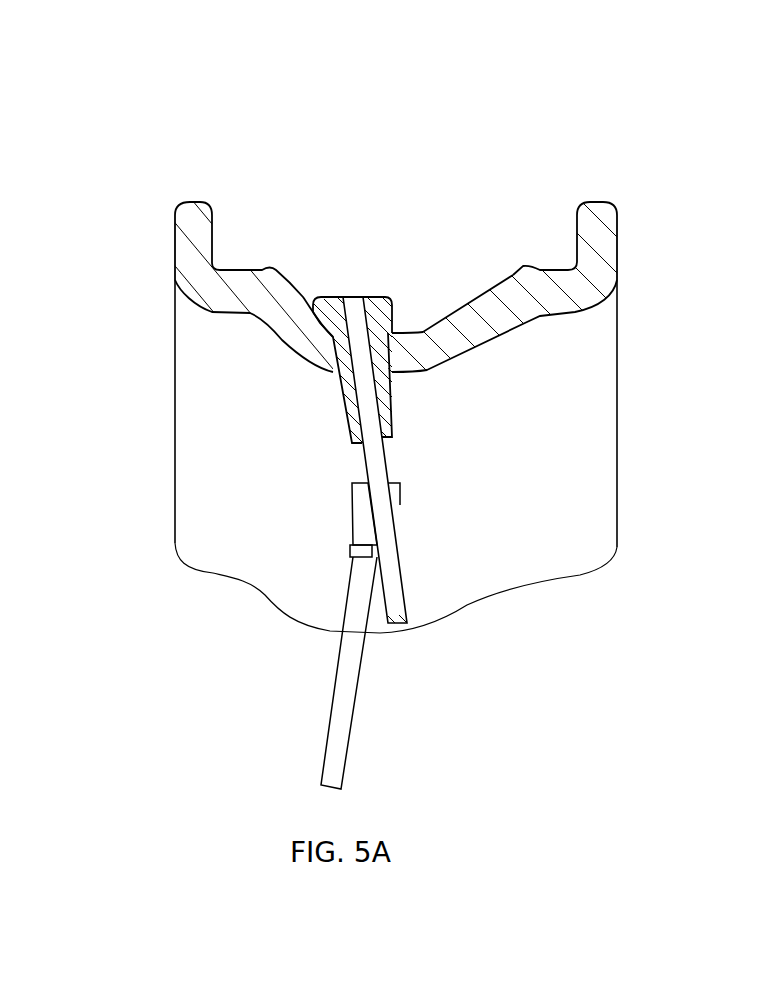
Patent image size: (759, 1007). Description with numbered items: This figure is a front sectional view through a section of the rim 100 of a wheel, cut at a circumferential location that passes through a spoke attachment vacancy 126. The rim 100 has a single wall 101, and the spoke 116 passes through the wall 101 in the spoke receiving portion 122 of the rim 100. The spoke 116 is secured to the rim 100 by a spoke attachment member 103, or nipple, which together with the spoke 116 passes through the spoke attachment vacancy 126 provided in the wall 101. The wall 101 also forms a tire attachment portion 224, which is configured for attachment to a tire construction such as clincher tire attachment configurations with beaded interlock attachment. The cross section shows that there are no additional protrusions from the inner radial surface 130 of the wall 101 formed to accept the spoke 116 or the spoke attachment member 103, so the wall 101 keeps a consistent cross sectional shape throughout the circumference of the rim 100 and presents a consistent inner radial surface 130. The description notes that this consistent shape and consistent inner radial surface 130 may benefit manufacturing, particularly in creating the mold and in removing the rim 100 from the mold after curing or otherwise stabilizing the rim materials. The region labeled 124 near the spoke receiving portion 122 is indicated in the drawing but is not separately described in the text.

The rim 100 is at (184, 207).
The wall 101 is at (605, 209).
The spoke attachment member 103 is at (342, 371).
The spoke 116 is at (338, 684).
The spoke receiving portion 122 is at (339, 274).
The pin head recess 124 is at (426, 300).
The spoke attachment vacancy 126 is at (399, 388).
The inner radial surface 130 is at (482, 400).
The tire attachment portion 224 is at (237, 240).